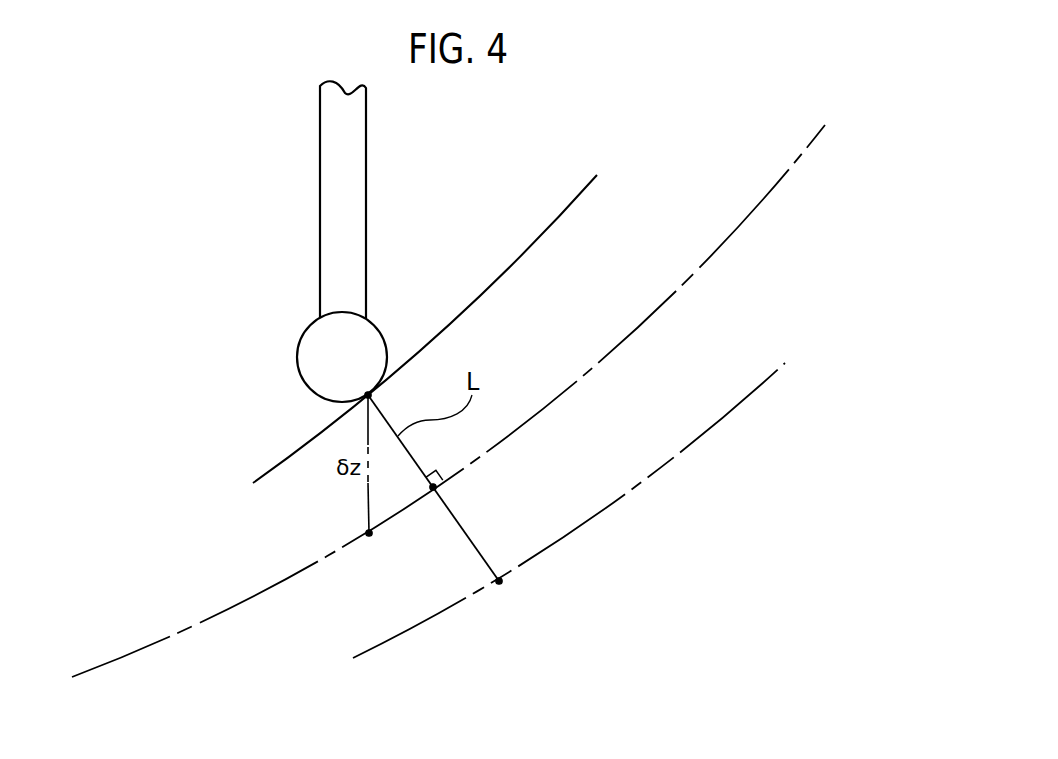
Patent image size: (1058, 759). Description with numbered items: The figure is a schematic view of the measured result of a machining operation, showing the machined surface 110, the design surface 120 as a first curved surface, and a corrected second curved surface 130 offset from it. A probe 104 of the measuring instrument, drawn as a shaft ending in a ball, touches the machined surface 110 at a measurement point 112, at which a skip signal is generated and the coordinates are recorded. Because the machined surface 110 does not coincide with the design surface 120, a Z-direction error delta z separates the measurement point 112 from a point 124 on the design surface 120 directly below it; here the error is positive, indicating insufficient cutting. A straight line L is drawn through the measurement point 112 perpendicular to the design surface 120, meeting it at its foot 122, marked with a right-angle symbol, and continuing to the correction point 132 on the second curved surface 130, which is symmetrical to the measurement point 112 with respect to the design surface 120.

The probe 104 is at (328, 135).
The machined surface 110 is at (298, 453).
The measurement point 112 is at (372, 396).
The design surface 120 is at (773, 168).
The normal foot point on design surface 122 is at (434, 490).
The vertical projection point 124 is at (369, 533).
The offset surface 130 is at (723, 417).
The correction point 132 is at (499, 581).